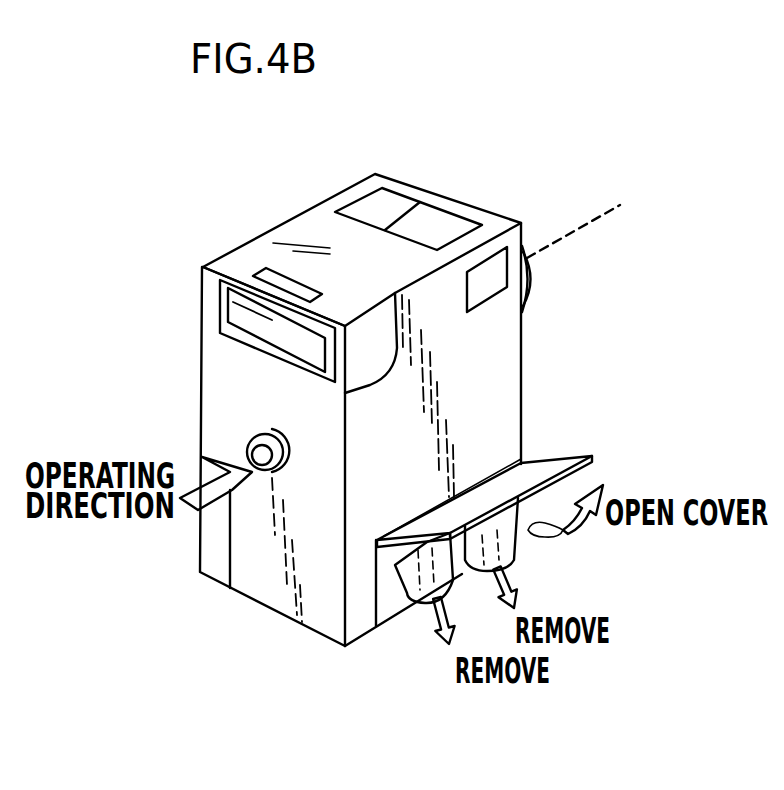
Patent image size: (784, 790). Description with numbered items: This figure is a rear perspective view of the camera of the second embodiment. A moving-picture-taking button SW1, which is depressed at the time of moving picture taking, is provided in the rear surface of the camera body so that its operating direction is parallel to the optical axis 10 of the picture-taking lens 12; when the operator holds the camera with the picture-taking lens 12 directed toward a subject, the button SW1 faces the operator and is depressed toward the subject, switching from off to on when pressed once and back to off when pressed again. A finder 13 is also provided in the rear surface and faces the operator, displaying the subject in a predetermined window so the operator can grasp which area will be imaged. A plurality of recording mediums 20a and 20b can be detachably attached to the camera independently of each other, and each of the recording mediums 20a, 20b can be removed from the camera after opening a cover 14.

The optical axis 10 is at (588, 222).
The picture-taking lens 12 is at (529, 277).
The finder 13 is at (232, 291).
The cover 14 is at (548, 461).
The recording medium 20a is at (430, 598).
The recording medium 20b is at (517, 563).
The moving-picture-taking button SW1 is at (262, 458).